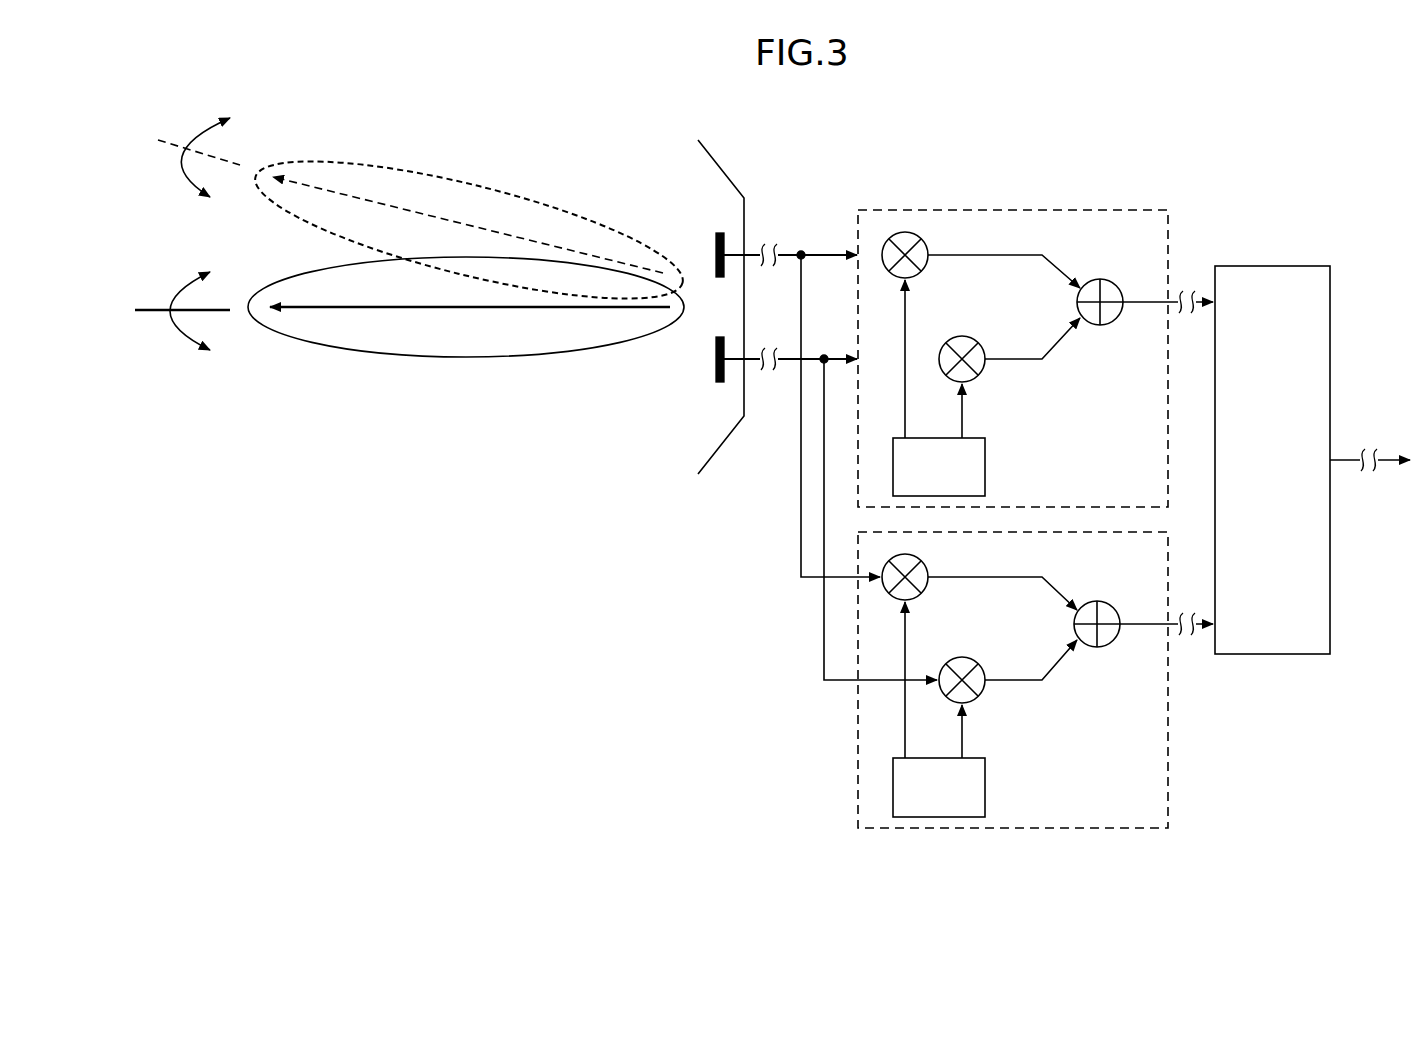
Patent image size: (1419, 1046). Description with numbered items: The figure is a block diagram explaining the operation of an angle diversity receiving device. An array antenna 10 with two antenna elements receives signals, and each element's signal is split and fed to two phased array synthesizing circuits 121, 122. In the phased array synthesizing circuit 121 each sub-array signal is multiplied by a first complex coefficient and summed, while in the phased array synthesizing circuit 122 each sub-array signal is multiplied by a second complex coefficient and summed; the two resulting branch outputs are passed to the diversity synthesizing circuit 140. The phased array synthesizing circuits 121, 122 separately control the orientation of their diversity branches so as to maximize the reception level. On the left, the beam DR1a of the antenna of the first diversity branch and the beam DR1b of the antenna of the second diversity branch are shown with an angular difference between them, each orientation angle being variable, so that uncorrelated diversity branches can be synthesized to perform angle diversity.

The array antenna 10 is at (716, 160).
The phased array synthesizing circuit 121 is at (1083, 207).
The phased array synthesizing circuit 122 is at (918, 830).
The diversity synthesizing circuit 140 is at (1267, 263).
The beam of antenna of first diversity branch DR1a is at (388, 152).
The beam of antenna of second diversity branch DR1b is at (430, 366).